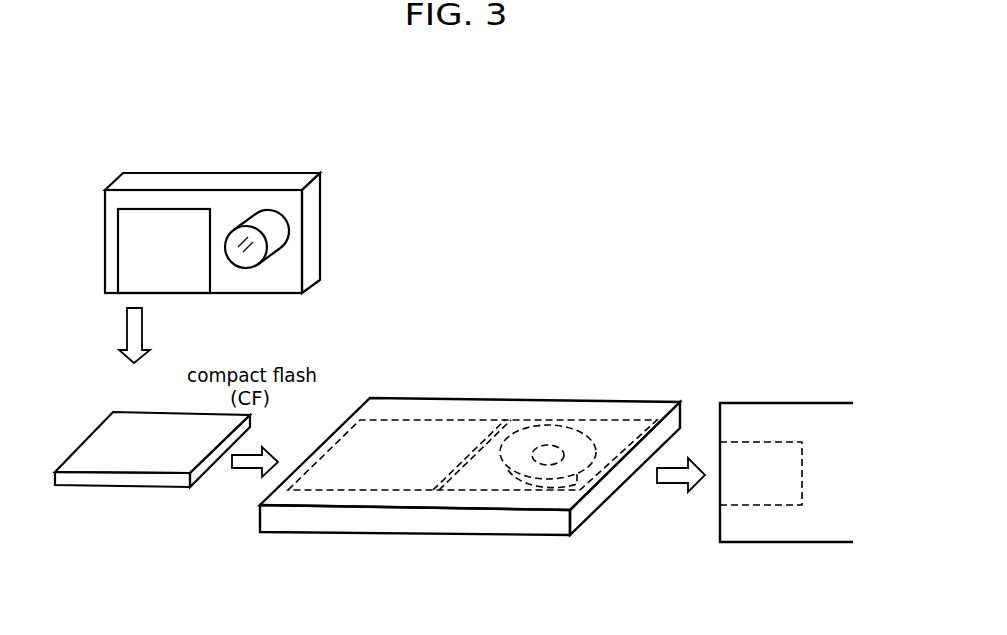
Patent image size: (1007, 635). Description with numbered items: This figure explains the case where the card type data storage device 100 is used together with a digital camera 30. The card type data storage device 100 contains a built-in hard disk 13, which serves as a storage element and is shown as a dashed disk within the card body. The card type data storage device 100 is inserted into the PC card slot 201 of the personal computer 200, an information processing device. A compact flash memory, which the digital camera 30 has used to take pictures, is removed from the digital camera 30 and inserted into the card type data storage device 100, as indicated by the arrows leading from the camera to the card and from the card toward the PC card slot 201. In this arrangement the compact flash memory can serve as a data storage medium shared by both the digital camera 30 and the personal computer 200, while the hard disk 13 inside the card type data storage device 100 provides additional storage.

The digital camera 30 is at (323, 200).
The card type data storage device 100 is at (470, 421).
The hard disk 13 is at (568, 435).
The personal computer 200 is at (778, 419).
The PC card slot 201 is at (758, 455).